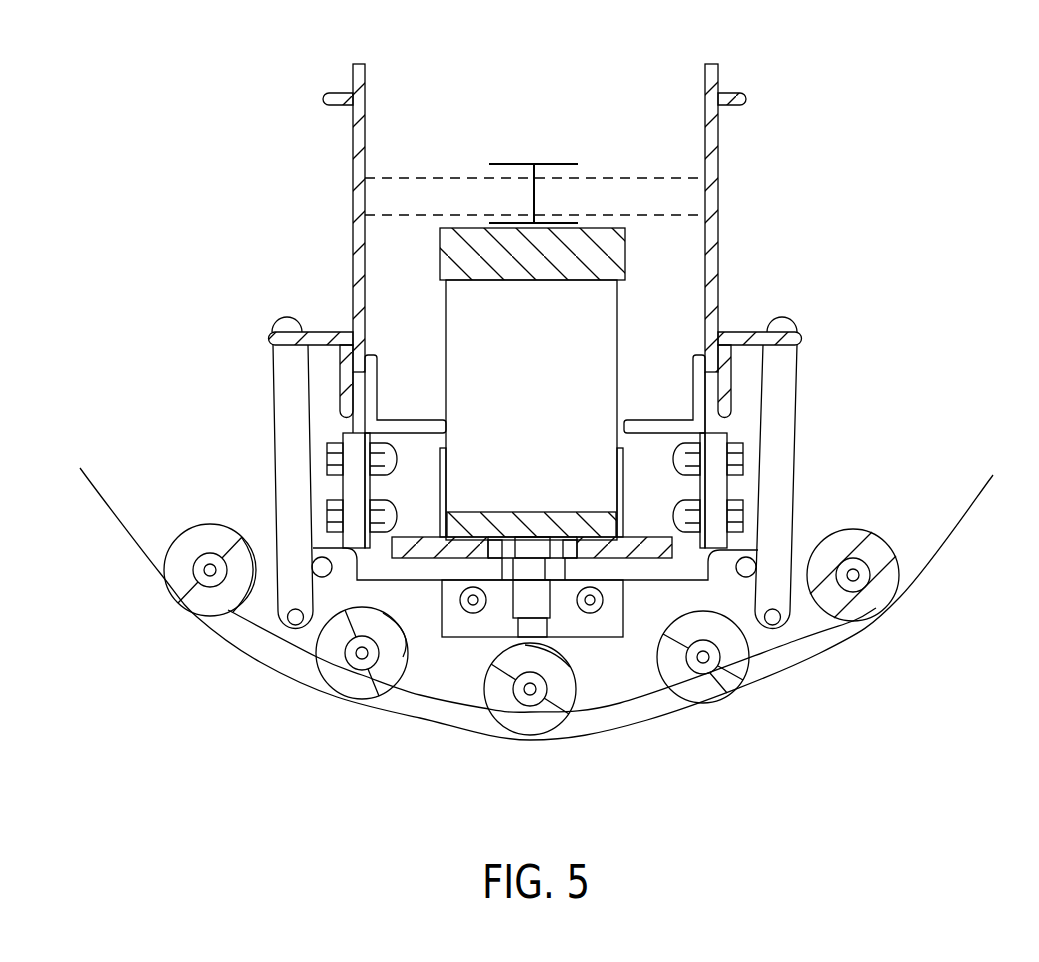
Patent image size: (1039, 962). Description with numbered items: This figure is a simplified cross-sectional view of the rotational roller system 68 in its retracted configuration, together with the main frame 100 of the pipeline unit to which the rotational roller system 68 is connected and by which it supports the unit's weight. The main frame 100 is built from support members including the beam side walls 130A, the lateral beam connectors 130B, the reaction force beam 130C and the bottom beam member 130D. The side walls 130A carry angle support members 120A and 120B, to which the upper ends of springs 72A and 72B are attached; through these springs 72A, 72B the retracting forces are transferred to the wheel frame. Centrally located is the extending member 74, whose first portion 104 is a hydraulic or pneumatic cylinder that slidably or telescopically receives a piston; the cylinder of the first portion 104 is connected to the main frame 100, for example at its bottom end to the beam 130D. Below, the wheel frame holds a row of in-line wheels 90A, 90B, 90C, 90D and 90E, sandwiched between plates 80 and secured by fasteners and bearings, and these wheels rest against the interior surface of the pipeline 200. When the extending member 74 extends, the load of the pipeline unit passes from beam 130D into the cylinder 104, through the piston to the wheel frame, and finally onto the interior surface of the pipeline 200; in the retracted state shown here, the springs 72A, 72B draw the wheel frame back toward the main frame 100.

The main frame 100 is at (852, 88).
The rotational roller system 68 is at (923, 224).
The extending member 74 is at (400, 281).
The spring 72A is at (276, 458).
The spring 72B is at (797, 443).
The plate 80 is at (797, 642).
The wheel 90A is at (190, 593).
The wheel 90B is at (350, 692).
The wheel 90C is at (535, 725).
The wheel 90D is at (707, 690).
The wheel 90E is at (860, 607).
The first portion 104 is at (598, 320).
The angle support member 120A is at (327, 332).
The angle support member 120B is at (745, 332).
The beam side wall 130A is at (357, 148).
The lateral beam connector 130B is at (424, 177).
The reaction force beam 130C is at (527, 162).
The bottom beam member 130D is at (632, 547).
The pipeline 200 is at (101, 495).